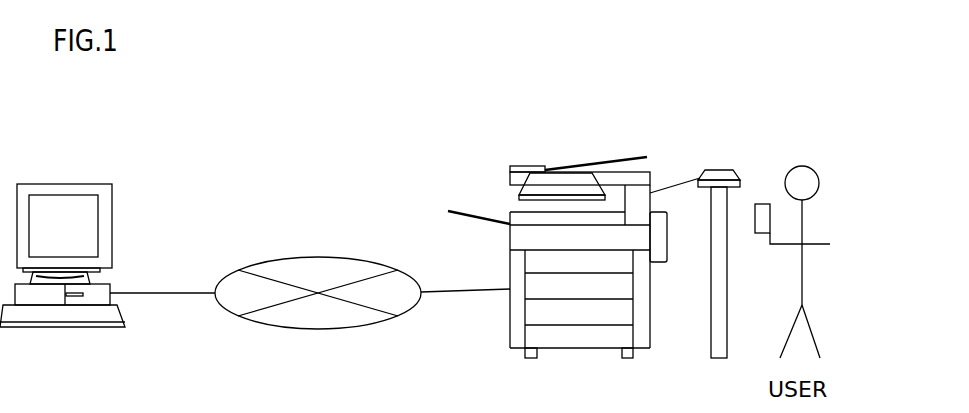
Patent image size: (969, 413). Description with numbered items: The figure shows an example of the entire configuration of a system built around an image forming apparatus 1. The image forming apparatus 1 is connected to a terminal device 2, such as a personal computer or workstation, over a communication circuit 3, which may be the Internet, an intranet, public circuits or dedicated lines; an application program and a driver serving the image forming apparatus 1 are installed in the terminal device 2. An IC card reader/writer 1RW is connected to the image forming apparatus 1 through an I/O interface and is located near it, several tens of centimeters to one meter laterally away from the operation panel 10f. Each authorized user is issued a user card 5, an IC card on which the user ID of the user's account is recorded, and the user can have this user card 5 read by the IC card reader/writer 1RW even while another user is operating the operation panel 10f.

The image forming apparatus 1 is at (562, 362).
The terminal device 2 is at (70, 327).
The communication circuit 3 is at (303, 329).
The user card 5 is at (761, 233).
The operation panel 10f is at (553, 185).
The IC card reader/writer 1RW is at (720, 180).